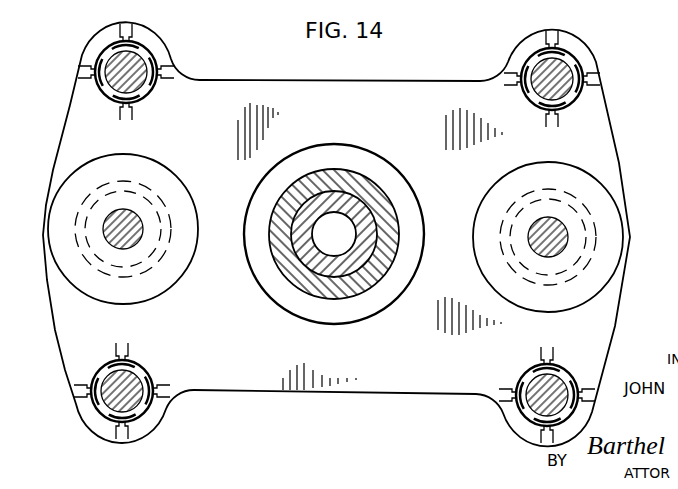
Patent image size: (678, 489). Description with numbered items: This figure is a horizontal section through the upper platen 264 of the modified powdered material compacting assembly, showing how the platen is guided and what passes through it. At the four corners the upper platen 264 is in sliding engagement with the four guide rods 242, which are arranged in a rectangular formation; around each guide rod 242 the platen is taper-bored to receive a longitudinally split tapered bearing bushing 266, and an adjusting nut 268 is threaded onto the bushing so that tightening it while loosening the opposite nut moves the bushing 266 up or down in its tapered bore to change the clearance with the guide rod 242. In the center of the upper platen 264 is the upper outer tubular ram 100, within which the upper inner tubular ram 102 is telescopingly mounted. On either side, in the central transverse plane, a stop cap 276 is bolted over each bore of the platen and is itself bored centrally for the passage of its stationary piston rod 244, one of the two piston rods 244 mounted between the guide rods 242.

The upper platen 264 is at (430, 78).
The adjusting nut 268 is at (512, 405).
The tapered bearing bushing 266 is at (524, 412).
The guide rod 242 is at (545, 389).
The stop cap 276 is at (175, 200).
The stationary piston rod 244 is at (136, 241).
The upper outer tubular ram 100 is at (378, 205).
The upper inner tubular ram 102 is at (320, 215).